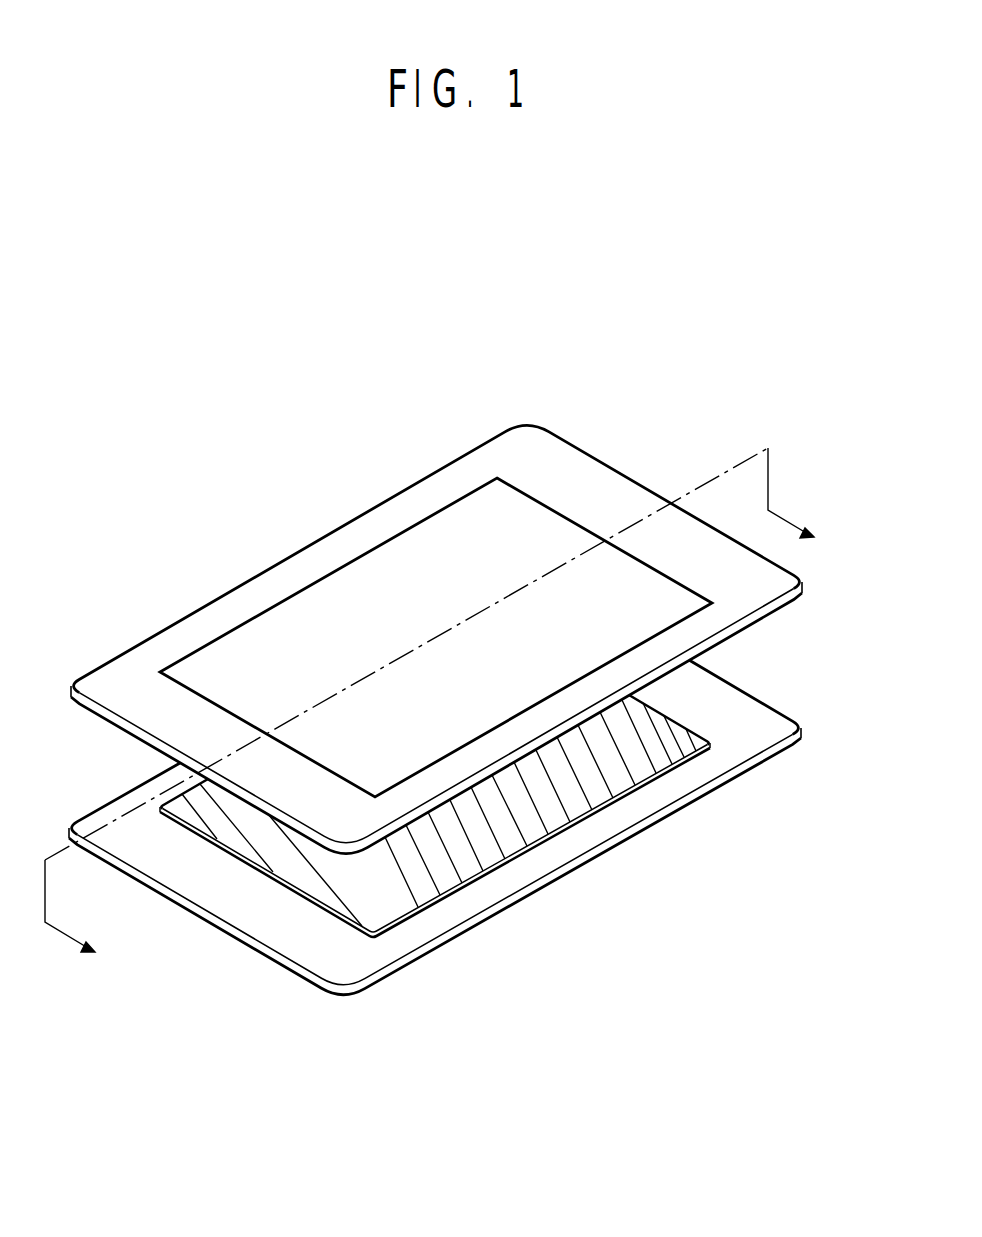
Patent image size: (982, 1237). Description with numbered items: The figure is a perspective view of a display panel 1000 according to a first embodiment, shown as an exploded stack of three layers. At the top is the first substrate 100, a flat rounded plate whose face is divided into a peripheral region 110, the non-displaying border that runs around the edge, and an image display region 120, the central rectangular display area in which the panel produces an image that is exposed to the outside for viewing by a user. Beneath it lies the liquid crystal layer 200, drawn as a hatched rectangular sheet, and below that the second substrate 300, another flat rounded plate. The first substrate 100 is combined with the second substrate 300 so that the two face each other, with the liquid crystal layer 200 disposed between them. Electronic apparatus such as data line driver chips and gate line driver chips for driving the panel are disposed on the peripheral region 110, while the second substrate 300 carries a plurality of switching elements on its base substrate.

The display panel 1000 is at (596, 356).
The first substrate 100 is at (323, 450).
The peripheral region 110 is at (307, 561).
The image display region 120 is at (397, 547).
The liquid crystal layer 200 is at (543, 823).
The second substrate 300 is at (642, 803).